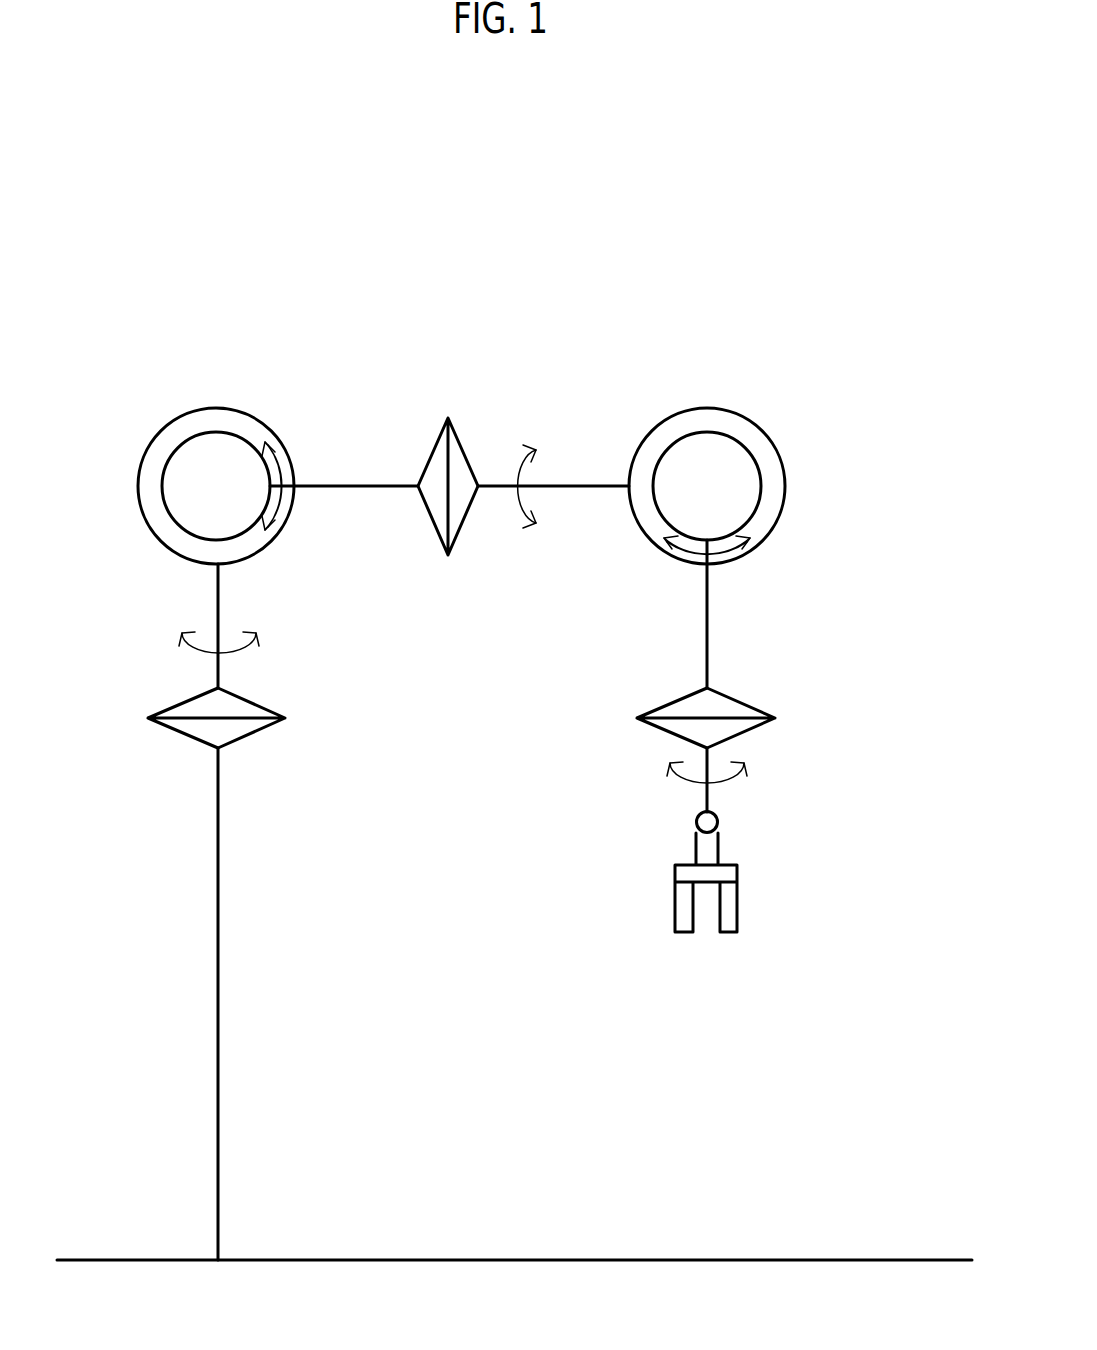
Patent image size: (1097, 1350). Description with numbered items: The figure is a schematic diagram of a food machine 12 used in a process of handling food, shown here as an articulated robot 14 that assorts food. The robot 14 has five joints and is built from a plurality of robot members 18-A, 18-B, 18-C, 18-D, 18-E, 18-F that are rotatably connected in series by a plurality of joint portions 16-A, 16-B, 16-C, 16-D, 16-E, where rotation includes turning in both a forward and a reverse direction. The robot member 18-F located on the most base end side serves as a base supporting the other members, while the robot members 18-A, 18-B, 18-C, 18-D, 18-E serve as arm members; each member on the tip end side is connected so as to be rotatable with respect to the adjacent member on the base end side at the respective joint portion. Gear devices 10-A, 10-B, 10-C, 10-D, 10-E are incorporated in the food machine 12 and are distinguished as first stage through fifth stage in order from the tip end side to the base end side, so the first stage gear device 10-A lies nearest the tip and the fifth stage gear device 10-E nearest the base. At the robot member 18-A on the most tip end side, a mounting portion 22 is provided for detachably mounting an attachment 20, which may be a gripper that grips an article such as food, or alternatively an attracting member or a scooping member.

The food machine 12 is at (855, 294).
The robot 14 is at (855, 337).
The first stage gear device 10-A is at (821, 719).
The second stage gear device 10-B is at (837, 486).
The third stage gear device 10-C is at (455, 366).
The fourth stage gear device 10-D is at (215, 366).
The fifth stage gear device 10-E is at (331, 721).
The first stage joint portion 16-A is at (786, 755).
The second stage joint portion 16-B is at (801, 548).
The third stage joint portion 16-C is at (490, 380).
The fourth stage joint portion 16-D is at (267, 380).
The fifth stage joint portion 16-E is at (298, 755).
The robot member 18-A is at (707, 807).
The robot member 18-B is at (707, 625).
The robot member 18-C is at (585, 489).
The robot member 18-D is at (362, 490).
The robot member 18-E is at (218, 593).
The robot member 18-F is at (218, 952).
The attachment 20 is at (748, 832).
The mounting portion 22 is at (718, 822).